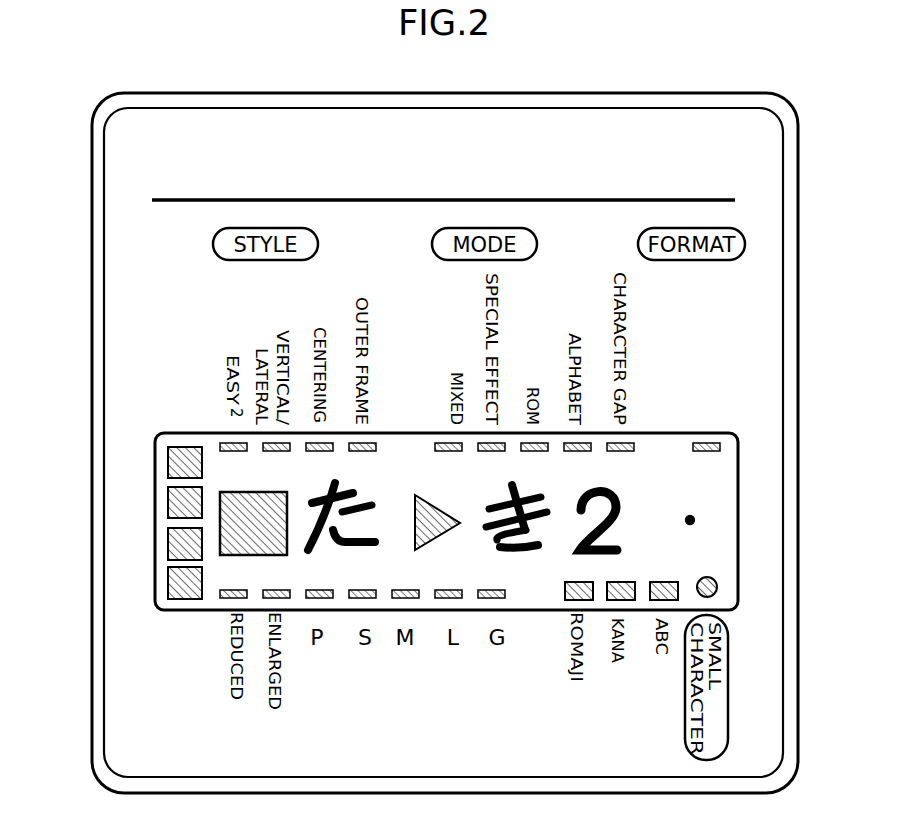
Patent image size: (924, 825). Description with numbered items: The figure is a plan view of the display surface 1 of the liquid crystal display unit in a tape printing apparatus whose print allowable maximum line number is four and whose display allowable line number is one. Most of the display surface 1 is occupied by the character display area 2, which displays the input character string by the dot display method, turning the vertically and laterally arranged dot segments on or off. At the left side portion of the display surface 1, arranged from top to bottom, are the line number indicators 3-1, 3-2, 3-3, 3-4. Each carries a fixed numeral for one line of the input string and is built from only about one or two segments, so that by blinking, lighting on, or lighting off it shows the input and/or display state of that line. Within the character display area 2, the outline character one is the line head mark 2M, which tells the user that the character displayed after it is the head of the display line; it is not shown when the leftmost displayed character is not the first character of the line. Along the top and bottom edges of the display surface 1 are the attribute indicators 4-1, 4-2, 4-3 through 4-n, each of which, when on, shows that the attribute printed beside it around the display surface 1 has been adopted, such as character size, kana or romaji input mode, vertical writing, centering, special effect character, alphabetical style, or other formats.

The display surface 1 is at (740, 488).
The character display area 2 is at (690, 520).
The line head mark 2M is at (223, 555).
The line number indicator 3-1 is at (168, 447).
The line number indicator 3-2 is at (168, 508).
The line number indicator 3-3 is at (168, 548).
The line number indicator 3-4 is at (168, 590).
The attribute indicator 4-1 is at (228, 443).
The attribute indicator 4-2 is at (282, 443).
The attribute indicator 4-3 is at (320, 443).
The attribute indicator 4-n is at (714, 594).